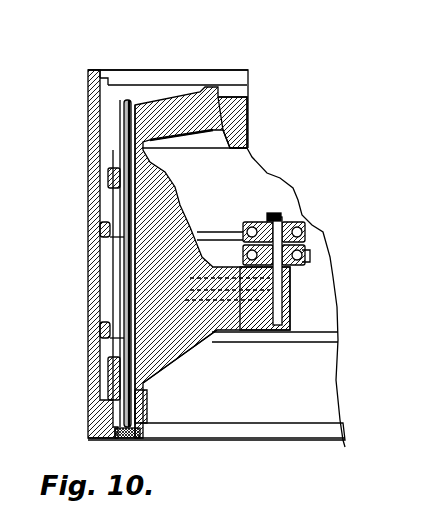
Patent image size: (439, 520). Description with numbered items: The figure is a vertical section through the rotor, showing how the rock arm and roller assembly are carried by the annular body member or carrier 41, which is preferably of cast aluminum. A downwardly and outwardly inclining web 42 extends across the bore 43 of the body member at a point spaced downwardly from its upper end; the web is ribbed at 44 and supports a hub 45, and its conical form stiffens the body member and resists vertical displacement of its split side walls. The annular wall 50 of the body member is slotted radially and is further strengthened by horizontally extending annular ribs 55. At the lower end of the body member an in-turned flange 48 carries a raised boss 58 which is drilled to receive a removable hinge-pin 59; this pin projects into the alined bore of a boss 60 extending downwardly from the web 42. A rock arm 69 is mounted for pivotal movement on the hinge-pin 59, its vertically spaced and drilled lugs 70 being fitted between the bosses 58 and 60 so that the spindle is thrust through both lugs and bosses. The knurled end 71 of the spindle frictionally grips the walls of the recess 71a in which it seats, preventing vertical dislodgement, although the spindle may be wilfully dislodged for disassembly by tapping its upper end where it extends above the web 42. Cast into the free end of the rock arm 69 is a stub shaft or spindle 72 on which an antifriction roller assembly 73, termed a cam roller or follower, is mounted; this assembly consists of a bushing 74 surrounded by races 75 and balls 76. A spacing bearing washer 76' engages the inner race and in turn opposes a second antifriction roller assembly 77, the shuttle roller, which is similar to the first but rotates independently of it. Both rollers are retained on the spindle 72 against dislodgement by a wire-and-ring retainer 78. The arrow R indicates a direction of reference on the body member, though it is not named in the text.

The annular body member or carrier 41 is at (86, 288).
The web 42 is at (174, 108).
The bore 43 is at (320, 377).
The rib 44 is at (152, 92).
The hub 45 is at (240, 115).
The in-turned flange 48 is at (143, 433).
The annular wall 50 is at (95, 206).
The annular ribs 55 is at (102, 226).
The raised boss 58 is at (148, 410).
The hinge-pin 59 is at (122, 262).
The boss 60 is at (120, 102).
The rock arm 69 is at (187, 352).
The drilled lugs 70 is at (110, 182).
The knurled end 71 is at (128, 440).
The recess 71a is at (113, 440).
The stub shaft or spindle 72 is at (280, 300).
The antifriction roller assembly 73 is at (312, 257).
The bushing 74 is at (292, 278).
The races 75 is at (285, 270).
The balls 76 is at (310, 236).
The spacing bearing washer 76' is at (312, 238).
The antifriction roller assembly 77 is at (308, 222).
The wire-and-ring retainer 78 is at (288, 218).
The direction R is at (86, 122).